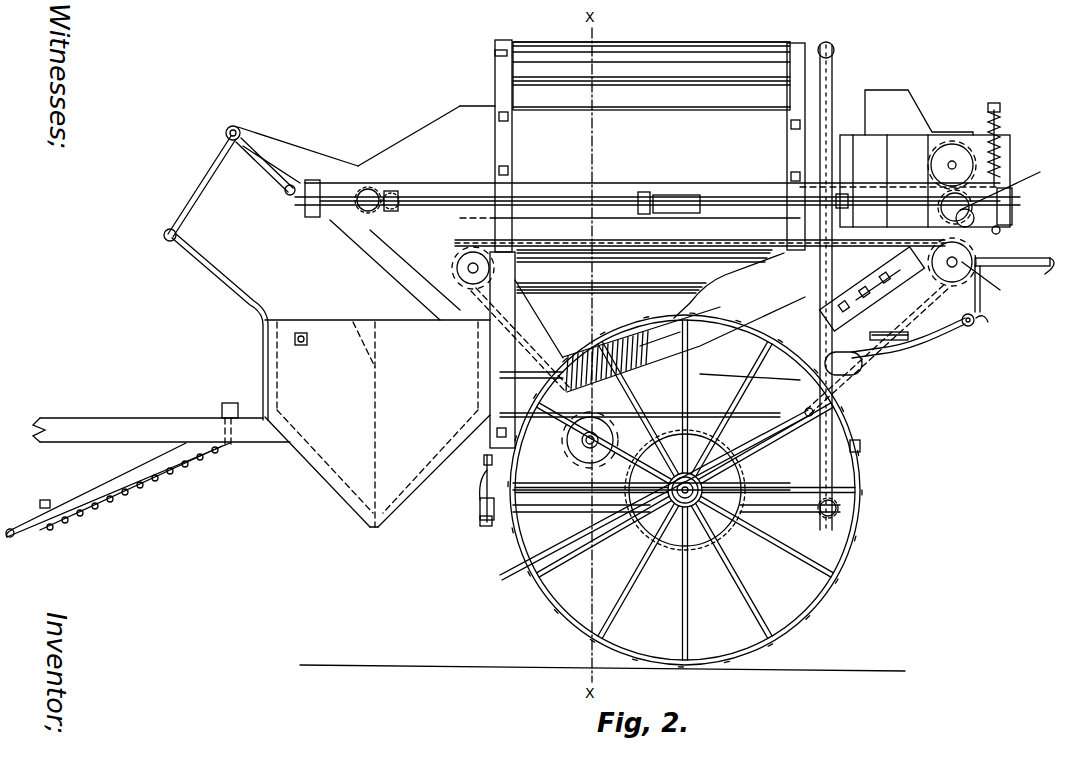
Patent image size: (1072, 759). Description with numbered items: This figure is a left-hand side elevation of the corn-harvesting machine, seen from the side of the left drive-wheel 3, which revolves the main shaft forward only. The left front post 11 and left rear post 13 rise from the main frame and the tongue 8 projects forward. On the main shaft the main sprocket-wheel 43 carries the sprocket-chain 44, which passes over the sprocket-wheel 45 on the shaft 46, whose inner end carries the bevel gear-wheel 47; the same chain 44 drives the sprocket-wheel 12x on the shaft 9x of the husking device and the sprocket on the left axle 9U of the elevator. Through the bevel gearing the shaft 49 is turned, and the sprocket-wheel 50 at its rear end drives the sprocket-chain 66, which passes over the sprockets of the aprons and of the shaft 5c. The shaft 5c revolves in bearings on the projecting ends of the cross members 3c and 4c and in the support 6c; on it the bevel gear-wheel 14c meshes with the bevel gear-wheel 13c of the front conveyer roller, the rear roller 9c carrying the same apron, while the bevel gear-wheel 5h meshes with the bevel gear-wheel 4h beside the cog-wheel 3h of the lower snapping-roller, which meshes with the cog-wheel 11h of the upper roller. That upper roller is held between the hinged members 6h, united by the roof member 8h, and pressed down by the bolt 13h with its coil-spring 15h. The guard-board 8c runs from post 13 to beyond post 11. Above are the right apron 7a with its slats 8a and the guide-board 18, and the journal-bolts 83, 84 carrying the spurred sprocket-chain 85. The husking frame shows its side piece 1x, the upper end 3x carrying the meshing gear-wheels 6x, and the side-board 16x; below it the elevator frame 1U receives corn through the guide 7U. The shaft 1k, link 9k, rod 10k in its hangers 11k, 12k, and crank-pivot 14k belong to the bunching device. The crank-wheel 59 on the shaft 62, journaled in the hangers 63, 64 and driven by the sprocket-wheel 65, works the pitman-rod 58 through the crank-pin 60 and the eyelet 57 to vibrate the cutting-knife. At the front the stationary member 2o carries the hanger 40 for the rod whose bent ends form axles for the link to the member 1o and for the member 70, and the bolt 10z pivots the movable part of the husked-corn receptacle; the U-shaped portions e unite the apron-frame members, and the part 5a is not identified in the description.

The right apron 7a is at (626, 42).
The slats or strips 8a is at (651, 98).
The left front post 11 is at (495, 139).
The left rear post 13 is at (786, 144).
The shaft 5c is at (548, 197).
The cross member 3c is at (305, 212).
The hanger 40 is at (285, 192).
The sprocket-wheel 50 is at (270, 174).
The crank-pin 60 is at (203, 180).
The member 70 is at (309, 146).
The guard-board 8c is at (460, 110).
The bevel gear-wheel 13c is at (368, 188).
The bevel gear-wheel 14c is at (392, 190).
The support 6c is at (646, 192).
The roller 9c is at (852, 198).
The sprocket-chain 66 is at (832, 80).
The member 6h is at (905, 181).
The member 8h is at (950, 130).
The cog-wheel 11h is at (952, 165).
The bevel gear-wheel 4h is at (940, 200).
The coil-spring 15h is at (1000, 123).
The bolt 13h is at (995, 104).
The cross member 4c is at (1012, 193).
The bevel gear-wheel 5h is at (1009, 183).
The cog-wheel 3h is at (975, 222).
The hanger 64 is at (651, 491).
The shaft 62 is at (581, 520).
The hanger 63 is at (790, 502).
The sprocket-wheel 65 is at (832, 516).
The shaft 49 is at (865, 451).
The frame 1U is at (514, 350).
The left axle 9U is at (498, 315).
The stationary member 2o is at (382, 242).
The upper end 3x is at (395, 327).
The bolt 10z is at (307, 340).
The member 1o is at (248, 310).
The tongue 8 is at (76, 417).
The journal-bolt 84 is at (158, 453).
The sprocket-chain 85 is at (145, 488).
The journal-bolt 83 is at (42, 494).
The guide-board 18 is at (11, 528).
The side-board 16x is at (686, 322).
The guard or guide 7U is at (655, 350).
The side piece 1x is at (677, 350).
The left drive-wheel 3 is at (866, 514).
The main sprocket-wheel 43 is at (668, 548).
The bevel gear-wheel 47 is at (669, 490).
The sprocket-wheel 45 is at (566, 457).
The shaft 46 is at (582, 448).
The lever rod 5a is at (860, 470).
The sprocket-chain 44 is at (885, 375).
The gear-wheels 6x is at (918, 262).
The shaft 1k is at (1020, 264).
The sprocket-wheel 12x is at (998, 278).
The shaft 9x is at (982, 290).
The crank-pivot 14k is at (971, 334).
The link 9k is at (988, 326).
The rod 10k is at (924, 340).
The hanger 12k is at (882, 338).
The hanger 11k is at (902, 285).
The U-shaped portions e is at (843, 363).
The eyelet 57 is at (484, 460).
The pitman-rod 58 is at (462, 485).
The crank-wheel 59 is at (480, 521).